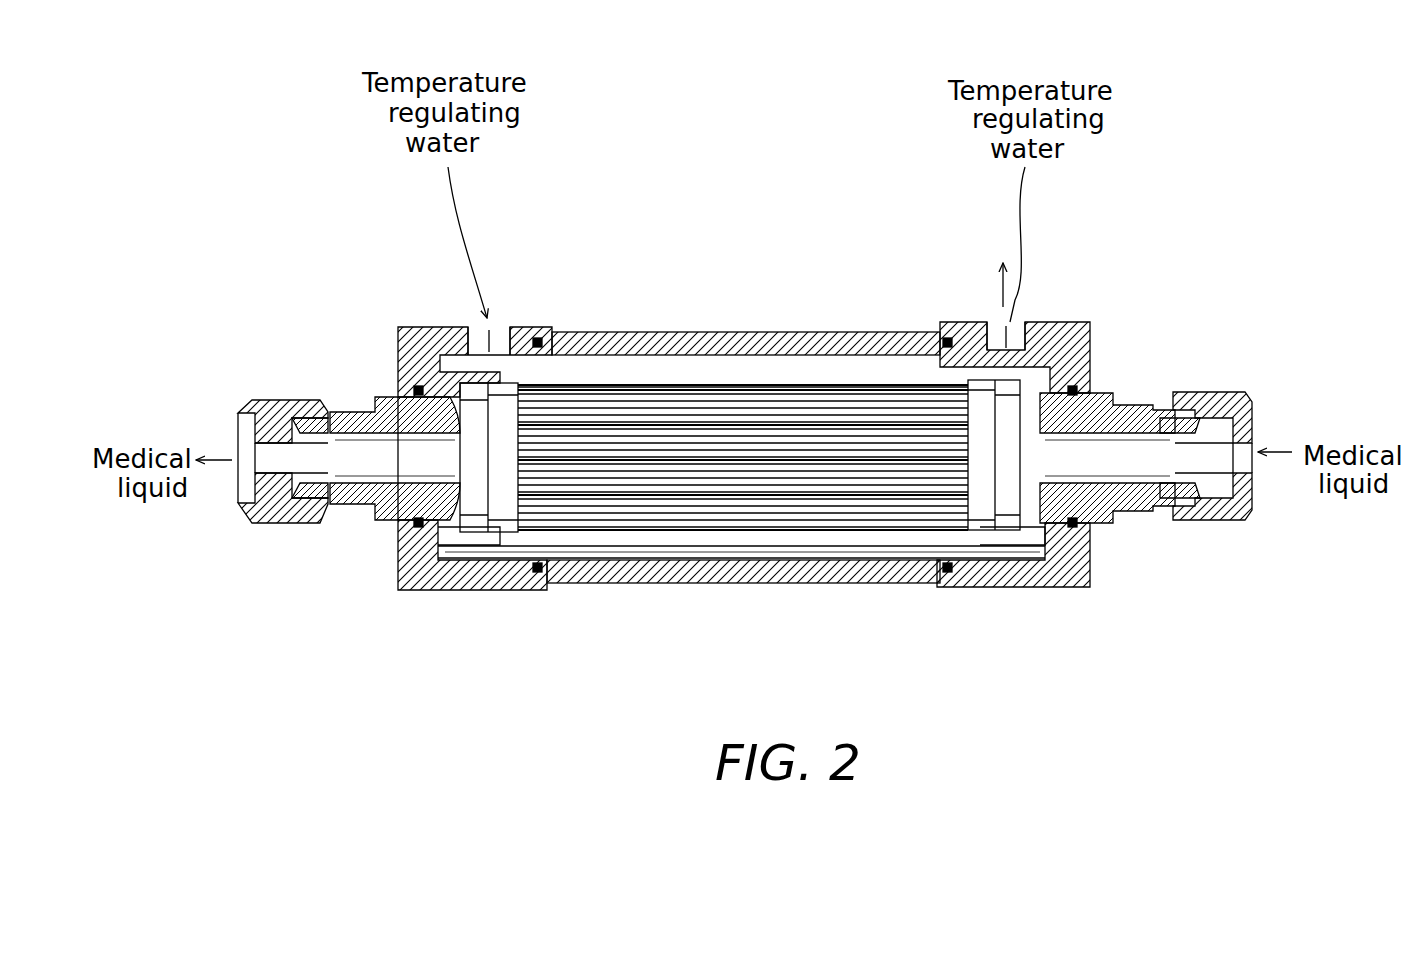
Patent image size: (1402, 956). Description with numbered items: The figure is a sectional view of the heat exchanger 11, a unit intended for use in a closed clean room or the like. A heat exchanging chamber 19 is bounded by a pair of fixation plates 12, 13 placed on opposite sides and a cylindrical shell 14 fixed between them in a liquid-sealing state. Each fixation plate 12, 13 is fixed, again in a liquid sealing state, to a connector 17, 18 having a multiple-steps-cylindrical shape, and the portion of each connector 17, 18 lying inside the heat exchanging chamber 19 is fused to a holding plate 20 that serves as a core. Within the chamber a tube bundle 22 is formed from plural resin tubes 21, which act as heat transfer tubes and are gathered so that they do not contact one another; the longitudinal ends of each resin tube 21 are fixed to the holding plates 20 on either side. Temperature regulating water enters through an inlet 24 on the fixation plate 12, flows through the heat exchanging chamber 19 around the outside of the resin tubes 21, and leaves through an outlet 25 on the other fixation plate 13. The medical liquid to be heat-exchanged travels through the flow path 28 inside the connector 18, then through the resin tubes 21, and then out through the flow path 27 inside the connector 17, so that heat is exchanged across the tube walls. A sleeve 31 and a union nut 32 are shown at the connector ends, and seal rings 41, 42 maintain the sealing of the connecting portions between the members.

The heat exchanger 11 is at (668, 265).
The fixation plate 12 is at (408, 327).
The fixation plate 13 is at (1070, 322).
The cylindrical shell 14 is at (780, 332).
The connector 17 is at (452, 545).
The connector 18 is at (1013, 545).
The heat exchanging chamber 19 is at (630, 546).
The holding plate 20 is at (510, 395).
The resin tube 21 is at (755, 460).
The tube bundle 22 is at (845, 385).
The inlet 24 is at (477, 325).
The outlet 25 is at (1020, 322).
The flow path 27 is at (372, 465).
The flow path 28 is at (1120, 452).
The sleeve 31 is at (320, 505).
The union nut 32 is at (264, 525).
The seal ring 41 is at (420, 590).
The seal ring 42 is at (522, 590).